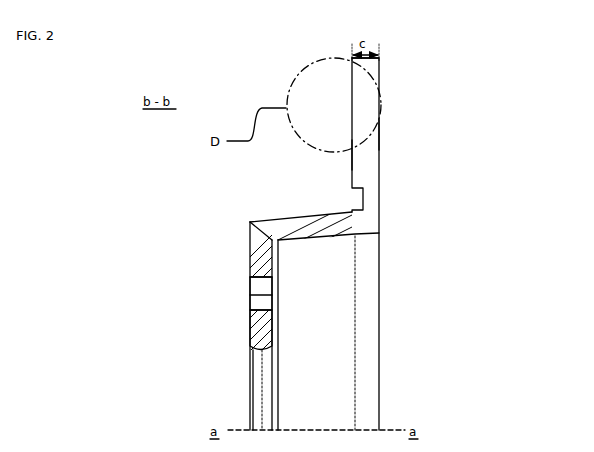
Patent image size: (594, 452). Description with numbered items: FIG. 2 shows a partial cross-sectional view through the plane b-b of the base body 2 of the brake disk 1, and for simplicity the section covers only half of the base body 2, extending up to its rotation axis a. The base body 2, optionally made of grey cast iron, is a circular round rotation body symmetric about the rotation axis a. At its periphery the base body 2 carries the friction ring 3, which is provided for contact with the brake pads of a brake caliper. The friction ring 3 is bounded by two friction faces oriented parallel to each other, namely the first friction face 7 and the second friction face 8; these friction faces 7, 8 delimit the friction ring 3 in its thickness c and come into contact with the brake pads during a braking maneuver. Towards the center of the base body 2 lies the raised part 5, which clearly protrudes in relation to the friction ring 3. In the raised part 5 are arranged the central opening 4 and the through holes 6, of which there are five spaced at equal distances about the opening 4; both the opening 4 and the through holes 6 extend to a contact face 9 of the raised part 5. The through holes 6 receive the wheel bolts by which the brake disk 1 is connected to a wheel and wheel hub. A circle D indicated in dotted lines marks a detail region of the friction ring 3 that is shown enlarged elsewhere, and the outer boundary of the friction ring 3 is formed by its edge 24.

The brake disk 1 is at (484, 203).
The base body 2 is at (382, 371).
The friction ring 3 is at (382, 114).
The opening 4 is at (257, 389).
The raised part 5 is at (250, 258).
The through holes 6 is at (264, 287).
The first friction face 7 is at (350, 156).
The second friction face 8 is at (384, 135).
The contact face 9 is at (248, 333).
The edge 24 is at (535, 303).